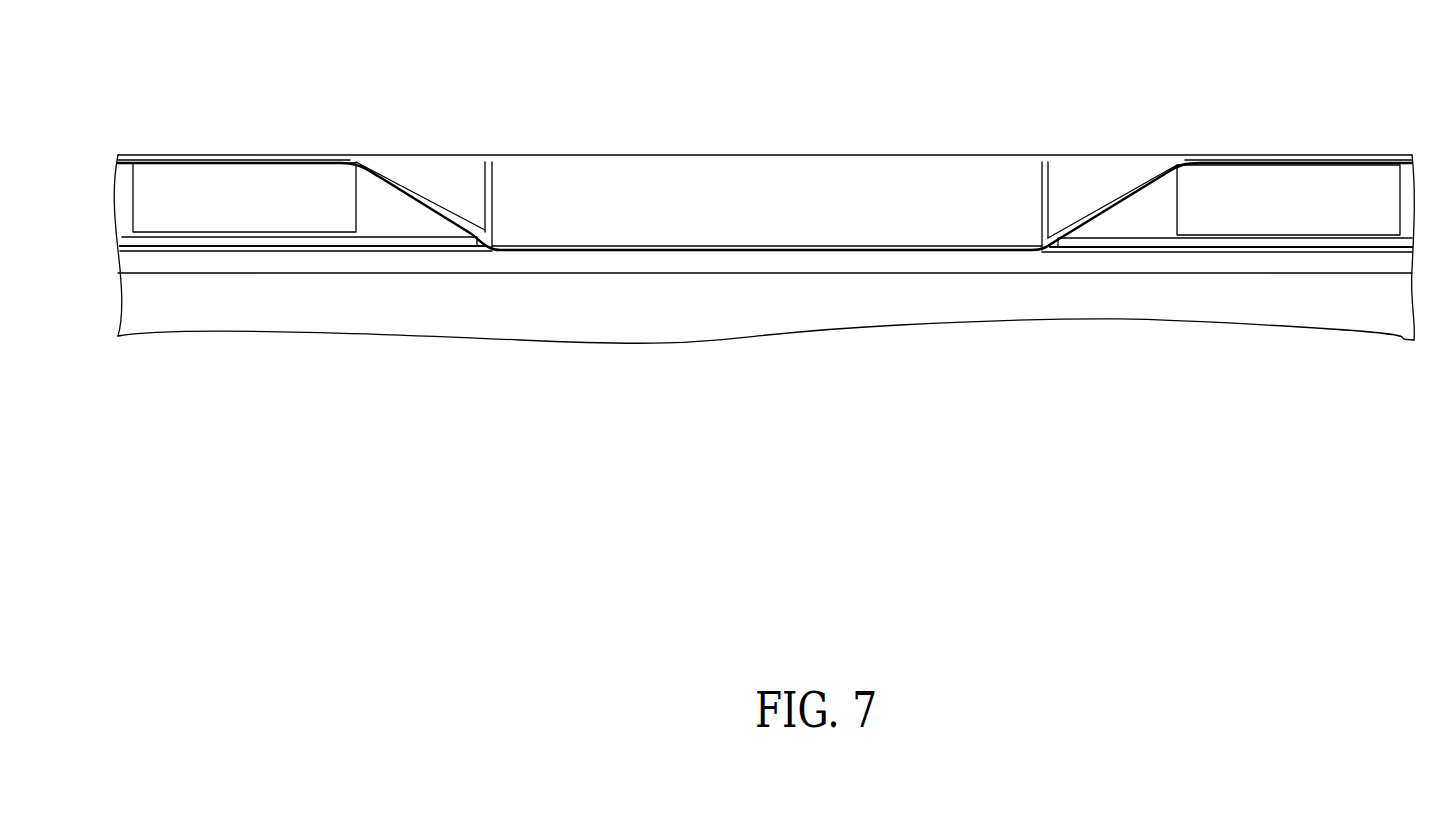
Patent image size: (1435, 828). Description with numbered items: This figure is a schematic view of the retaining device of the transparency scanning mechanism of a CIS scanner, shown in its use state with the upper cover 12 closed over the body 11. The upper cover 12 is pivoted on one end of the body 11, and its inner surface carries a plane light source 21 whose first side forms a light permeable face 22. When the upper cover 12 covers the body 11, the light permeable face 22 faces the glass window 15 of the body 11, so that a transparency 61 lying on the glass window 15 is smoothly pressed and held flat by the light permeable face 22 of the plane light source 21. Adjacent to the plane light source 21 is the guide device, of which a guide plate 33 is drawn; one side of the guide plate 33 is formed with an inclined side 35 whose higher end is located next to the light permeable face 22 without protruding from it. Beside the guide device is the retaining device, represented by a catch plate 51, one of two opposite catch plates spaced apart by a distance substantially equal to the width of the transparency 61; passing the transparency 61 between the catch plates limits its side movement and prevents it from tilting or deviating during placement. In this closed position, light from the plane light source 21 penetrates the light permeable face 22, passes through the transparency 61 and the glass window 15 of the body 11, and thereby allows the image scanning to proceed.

The body 11 is at (1332, 305).
The upper cover 12 is at (957, 157).
The glass window 15 is at (763, 262).
The plane light source 21 is at (774, 187).
The light permeable face 22 is at (585, 249).
The guide plate 33 is at (440, 178).
The inclined side 35 is at (457, 214).
The catch plate 51 is at (234, 178).
The transparency 61 is at (688, 252).